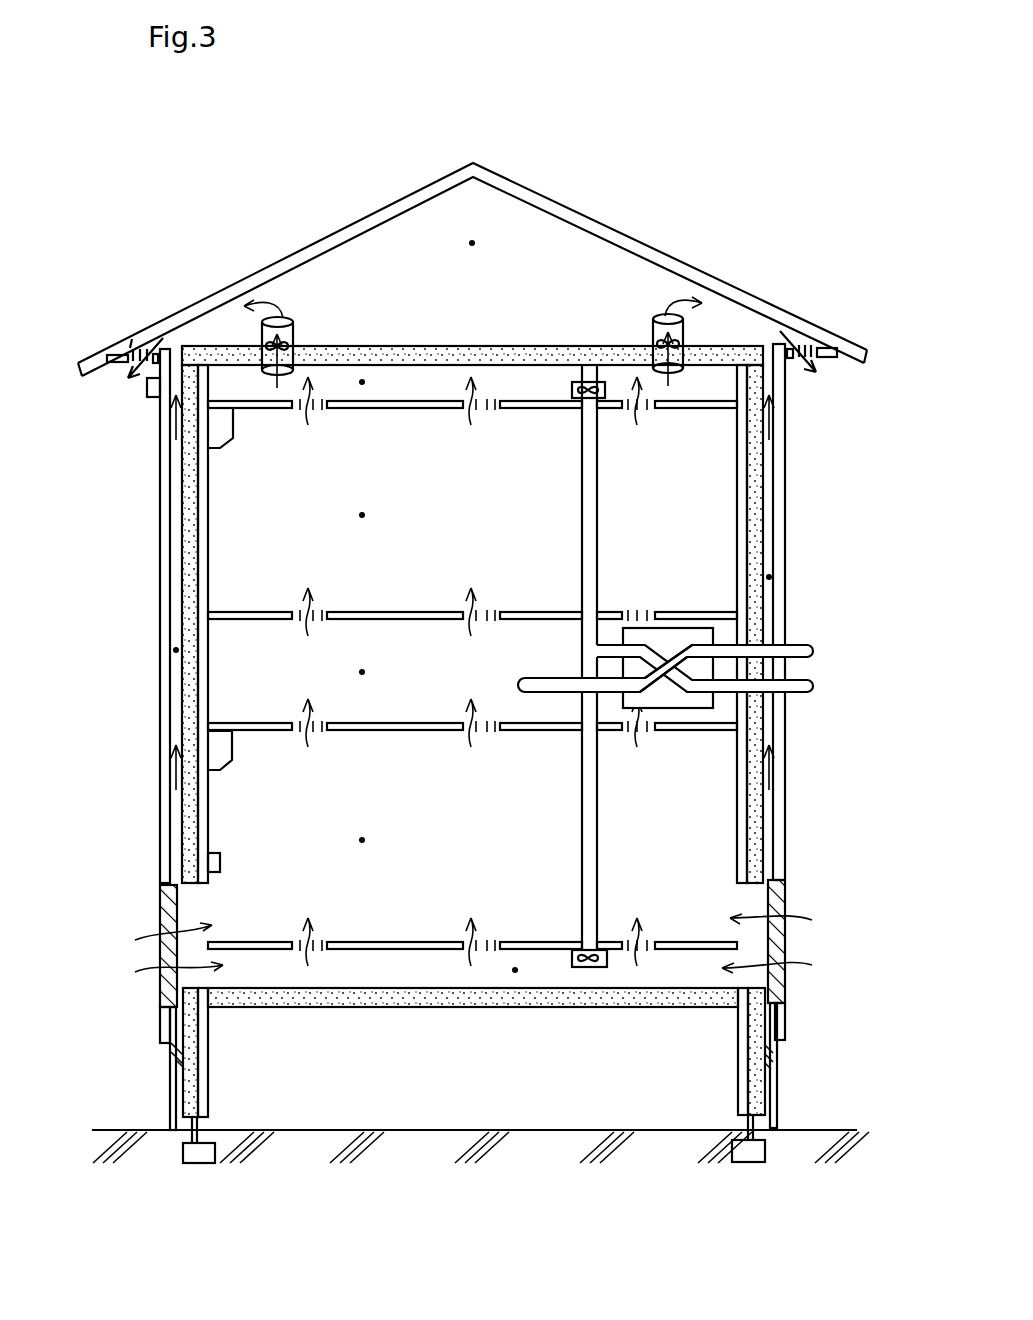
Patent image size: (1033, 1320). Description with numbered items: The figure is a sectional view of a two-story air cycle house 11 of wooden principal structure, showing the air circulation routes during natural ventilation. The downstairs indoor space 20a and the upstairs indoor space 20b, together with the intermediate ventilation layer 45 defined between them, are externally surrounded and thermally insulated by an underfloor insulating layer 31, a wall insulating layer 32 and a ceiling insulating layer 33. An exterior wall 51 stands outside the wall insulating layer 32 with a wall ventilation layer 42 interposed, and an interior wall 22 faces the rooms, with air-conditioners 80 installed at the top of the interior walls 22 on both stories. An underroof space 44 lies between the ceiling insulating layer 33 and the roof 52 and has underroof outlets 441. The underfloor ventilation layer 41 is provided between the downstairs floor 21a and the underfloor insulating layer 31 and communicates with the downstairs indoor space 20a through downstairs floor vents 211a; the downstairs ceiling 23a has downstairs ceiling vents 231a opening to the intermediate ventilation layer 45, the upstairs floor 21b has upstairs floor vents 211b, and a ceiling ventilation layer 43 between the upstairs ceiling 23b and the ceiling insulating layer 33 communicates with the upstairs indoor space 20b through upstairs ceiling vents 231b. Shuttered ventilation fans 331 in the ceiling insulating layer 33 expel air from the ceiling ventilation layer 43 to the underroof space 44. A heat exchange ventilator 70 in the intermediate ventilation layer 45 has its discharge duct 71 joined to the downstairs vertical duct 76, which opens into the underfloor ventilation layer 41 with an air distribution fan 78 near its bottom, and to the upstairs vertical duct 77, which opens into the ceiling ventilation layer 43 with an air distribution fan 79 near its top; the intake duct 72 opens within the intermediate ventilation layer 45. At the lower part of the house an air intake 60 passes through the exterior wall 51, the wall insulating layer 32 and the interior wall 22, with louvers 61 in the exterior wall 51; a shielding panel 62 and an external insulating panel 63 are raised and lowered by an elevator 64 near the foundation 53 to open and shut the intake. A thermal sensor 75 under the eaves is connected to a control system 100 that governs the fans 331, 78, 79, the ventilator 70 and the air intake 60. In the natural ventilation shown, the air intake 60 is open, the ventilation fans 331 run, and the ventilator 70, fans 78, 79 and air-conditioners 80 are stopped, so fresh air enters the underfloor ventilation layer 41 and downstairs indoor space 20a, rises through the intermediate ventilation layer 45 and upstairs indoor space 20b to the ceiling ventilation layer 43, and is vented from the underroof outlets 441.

The air cycle house 11 is at (303, 132).
The roof 52 is at (399, 205).
The underroof space 44 is at (472, 243).
The underroof outlets 441 is at (128, 357).
The ventilation fans 331 is at (294, 335).
The ceiling insulating layer 33 is at (438, 346).
The ceiling ventilation layer 43 is at (362, 382).
The air distribution fan 79 is at (586, 382).
The thermal sensor 75 is at (150, 397).
The air-conditioners 80 is at (215, 425).
The exterior wall 51 is at (160, 523).
The wall insulating layer 32 is at (183, 600).
The wall ventilation layer 42 is at (176, 650).
The interior wall 22 is at (208, 512).
The upstairs indoor space 20b is at (362, 515).
The intermediate ventilation layer 45 is at (362, 672).
The downstairs indoor space 20a is at (362, 840).
The upstairs ceiling 23b is at (370, 410).
The upstairs ceiling vents 231b is at (295, 406).
The upstairs floor 21b is at (370, 612).
The upstairs floor vents 211b is at (295, 612).
The downstairs ceiling 23a is at (370, 732).
The downstairs ceiling vents 231a is at (295, 733).
The downstairs floor 21a is at (375, 942).
The downstairs floor vents 211a is at (295, 942).
The upstairs vertical duct 77 is at (582, 508).
The downstairs vertical duct 76 is at (582, 830).
The heat exchange ventilator 70 is at (693, 630).
The intake duct 72 is at (793, 654).
The discharge duct 71 is at (793, 690).
The control system 100 is at (208, 862).
The air intake 60 is at (147, 914).
The louvers 61 is at (160, 996).
The underfloor insulating layer 31 is at (385, 1007).
The shielding panel 62 is at (208, 1048).
The foundation 53 is at (172, 1120).
The insulating panel 63 is at (177, 1052).
The elevator 64 is at (200, 1148).
The underfloor ventilation layer 41 is at (515, 970).
The air distribution fan 78 is at (588, 968).